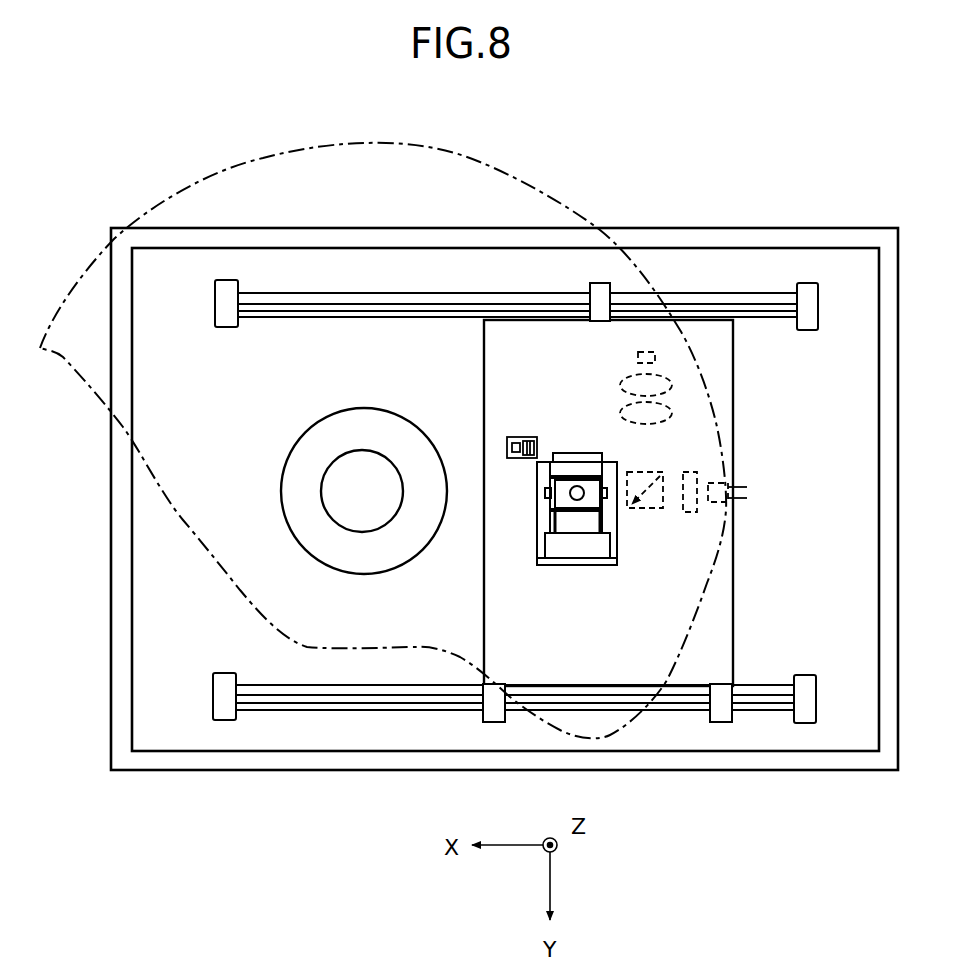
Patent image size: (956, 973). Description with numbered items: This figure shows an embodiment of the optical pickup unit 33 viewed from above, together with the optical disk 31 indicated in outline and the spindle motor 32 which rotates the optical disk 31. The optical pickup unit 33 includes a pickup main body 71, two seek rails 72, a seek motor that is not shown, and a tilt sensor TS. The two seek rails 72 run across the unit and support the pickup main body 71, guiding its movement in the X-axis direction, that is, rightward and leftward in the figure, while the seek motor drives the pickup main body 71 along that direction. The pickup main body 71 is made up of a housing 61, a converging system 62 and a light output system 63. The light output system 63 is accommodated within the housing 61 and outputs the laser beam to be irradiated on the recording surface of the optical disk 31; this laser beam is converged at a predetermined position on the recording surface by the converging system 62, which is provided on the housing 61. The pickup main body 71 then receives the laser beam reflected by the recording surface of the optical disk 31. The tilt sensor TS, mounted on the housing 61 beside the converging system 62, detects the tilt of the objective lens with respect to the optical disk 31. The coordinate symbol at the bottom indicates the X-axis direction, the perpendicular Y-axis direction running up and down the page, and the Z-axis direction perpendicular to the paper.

The optical disk 31 is at (383, 436).
The spindle motor 32 is at (358, 477).
The optical pickup unit 33 is at (504, 453).
The housing 61 is at (634, 502).
The converging system 62 is at (604, 547).
The light output system 63 is at (687, 534).
The pickup main body 71 is at (532, 376).
The seek rails 72 is at (515, 492).
The tilt sensor TS is at (543, 424).